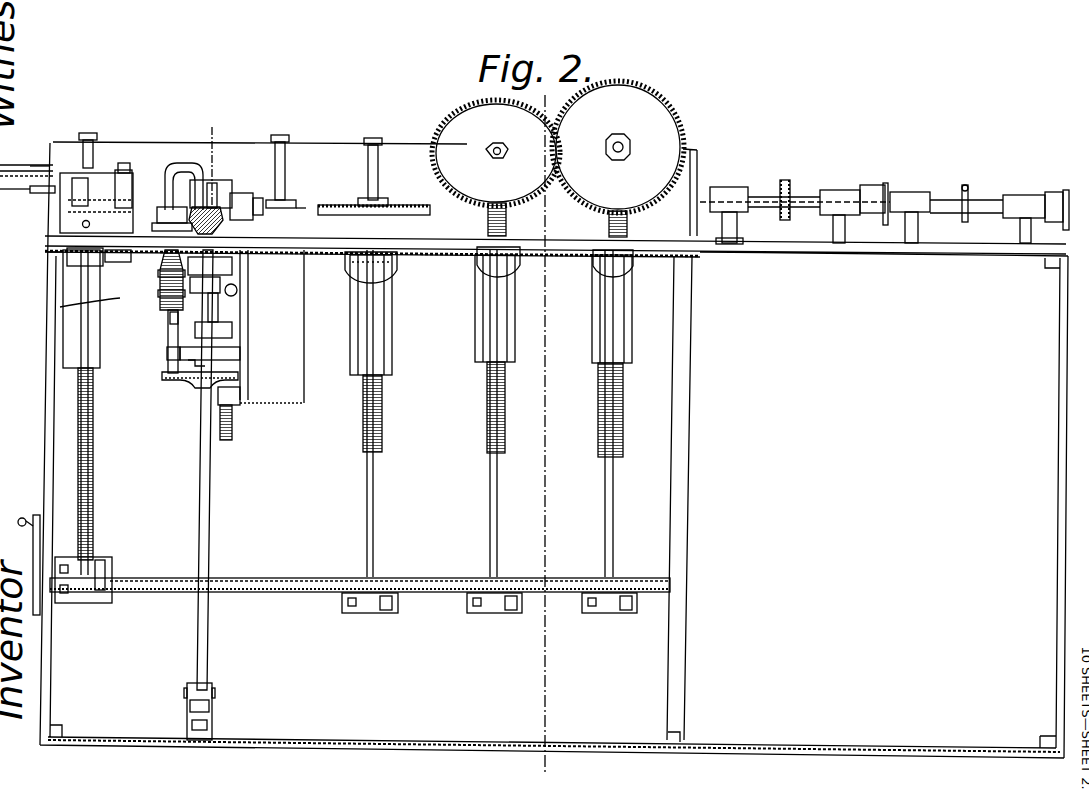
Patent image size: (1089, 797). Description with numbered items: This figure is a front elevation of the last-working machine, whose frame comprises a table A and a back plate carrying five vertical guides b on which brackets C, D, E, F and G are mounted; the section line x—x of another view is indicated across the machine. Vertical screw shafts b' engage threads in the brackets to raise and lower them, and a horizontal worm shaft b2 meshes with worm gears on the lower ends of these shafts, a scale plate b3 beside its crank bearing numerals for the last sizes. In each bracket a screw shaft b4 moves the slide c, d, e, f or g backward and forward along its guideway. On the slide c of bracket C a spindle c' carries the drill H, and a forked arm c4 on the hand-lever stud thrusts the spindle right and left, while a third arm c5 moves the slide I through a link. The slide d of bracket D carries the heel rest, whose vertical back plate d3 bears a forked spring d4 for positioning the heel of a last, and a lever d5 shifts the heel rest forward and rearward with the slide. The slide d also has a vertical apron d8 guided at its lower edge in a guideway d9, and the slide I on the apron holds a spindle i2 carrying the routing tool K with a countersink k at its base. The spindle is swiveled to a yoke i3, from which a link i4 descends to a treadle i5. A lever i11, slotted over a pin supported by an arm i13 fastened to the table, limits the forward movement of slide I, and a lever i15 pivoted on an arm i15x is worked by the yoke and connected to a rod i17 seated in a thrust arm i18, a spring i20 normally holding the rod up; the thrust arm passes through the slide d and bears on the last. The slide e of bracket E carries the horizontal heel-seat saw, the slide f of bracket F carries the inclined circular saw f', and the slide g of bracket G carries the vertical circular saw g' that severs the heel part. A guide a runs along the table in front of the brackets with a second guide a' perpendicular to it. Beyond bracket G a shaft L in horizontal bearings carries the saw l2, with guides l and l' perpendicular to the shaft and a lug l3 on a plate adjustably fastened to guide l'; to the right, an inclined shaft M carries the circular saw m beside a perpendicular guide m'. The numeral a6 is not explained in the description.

The table A is at (780, 263).
The line x— x is at (544, 441).
The slide c is at (30, 199).
The spindle c' is at (27, 198).
The forked arm c4 is at (50, 170).
The third arm c5 is at (165, 272).
The drill H is at (133, 178).
The vertical back plate d3 is at (192, 172).
The forked spring d4 is at (212, 160).
The lever d5 is at (207, 190).
The vertical apron d8 is at (248, 335).
The guideway d9 is at (240, 408).
The slide d is at (300, 215).
The routing tool K is at (225, 188).
The countersink k is at (249, 209).
The guide a is at (374, 218).
The second guide a' is at (161, 217).
The block a6 is at (99, 264).
The vertical guide b is at (343, 347).
The vertical screw shaft b' is at (347, 357).
The horizontal worm shaft b2 is at (132, 578).
The scale plate b3 is at (33, 549).
The screw shaft b4 is at (85, 225).
The slide f is at (482, 244).
The circular saw f' is at (496, 168).
The slide g is at (598, 244).
The vertical circular saw g' is at (618, 159).
The slide e is at (395, 268).
The bracket E is at (392, 340).
The bracket F is at (515, 326).
The bracket G is at (632, 346).
The bracket C is at (165, 310).
The bracket D is at (304, 348).
The slide I is at (232, 273).
The spindle i2 is at (219, 307).
The yoke i3 is at (190, 388).
The link i4 is at (200, 491).
The treadle i5 is at (187, 700).
The lever i11 is at (240, 350).
The arm i13 is at (237, 300).
The lever i15 is at (167, 352).
The arm i15x is at (205, 362).
The rod i17 is at (168, 316).
The thrust arm i18 is at (163, 292).
The spring i20 is at (160, 295).
The shaft L is at (760, 196).
The guide l is at (744, 228).
The guide l' is at (835, 271).
The saw l2 is at (790, 180).
The lug l3 is at (830, 240).
The shaft M is at (945, 200).
The circular saw m is at (952, 210).
The guide m' is at (1045, 238).